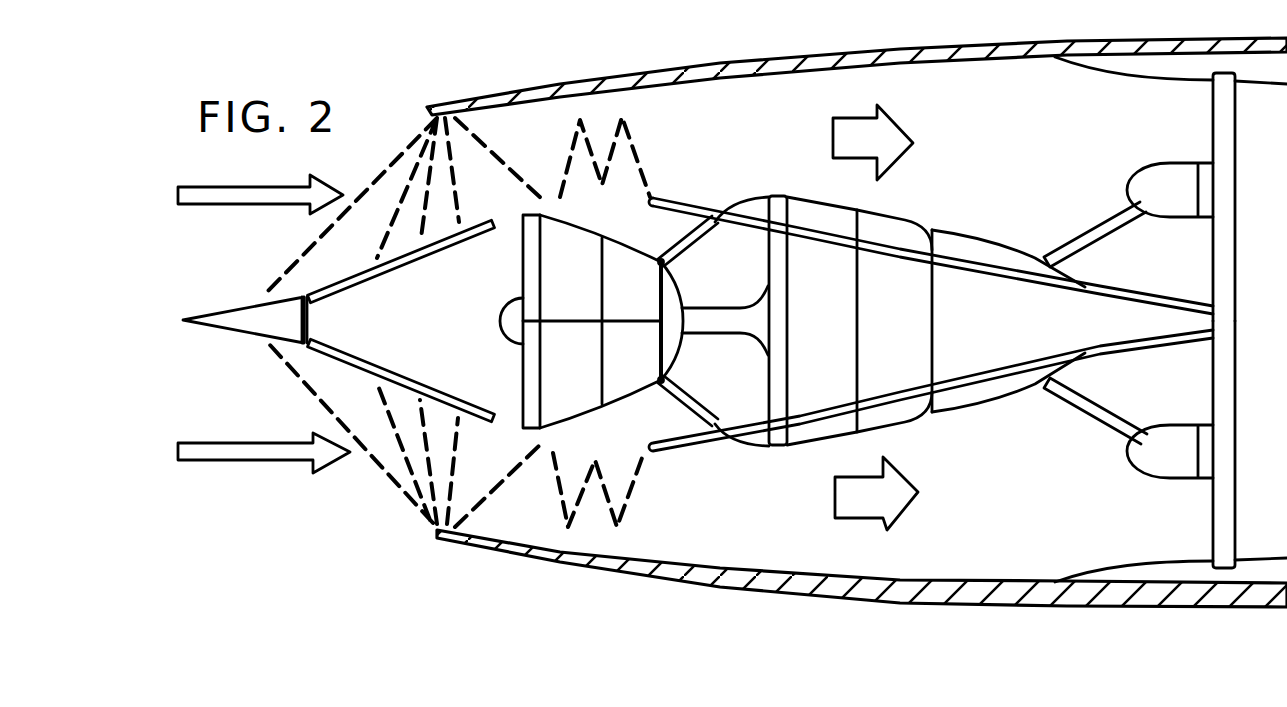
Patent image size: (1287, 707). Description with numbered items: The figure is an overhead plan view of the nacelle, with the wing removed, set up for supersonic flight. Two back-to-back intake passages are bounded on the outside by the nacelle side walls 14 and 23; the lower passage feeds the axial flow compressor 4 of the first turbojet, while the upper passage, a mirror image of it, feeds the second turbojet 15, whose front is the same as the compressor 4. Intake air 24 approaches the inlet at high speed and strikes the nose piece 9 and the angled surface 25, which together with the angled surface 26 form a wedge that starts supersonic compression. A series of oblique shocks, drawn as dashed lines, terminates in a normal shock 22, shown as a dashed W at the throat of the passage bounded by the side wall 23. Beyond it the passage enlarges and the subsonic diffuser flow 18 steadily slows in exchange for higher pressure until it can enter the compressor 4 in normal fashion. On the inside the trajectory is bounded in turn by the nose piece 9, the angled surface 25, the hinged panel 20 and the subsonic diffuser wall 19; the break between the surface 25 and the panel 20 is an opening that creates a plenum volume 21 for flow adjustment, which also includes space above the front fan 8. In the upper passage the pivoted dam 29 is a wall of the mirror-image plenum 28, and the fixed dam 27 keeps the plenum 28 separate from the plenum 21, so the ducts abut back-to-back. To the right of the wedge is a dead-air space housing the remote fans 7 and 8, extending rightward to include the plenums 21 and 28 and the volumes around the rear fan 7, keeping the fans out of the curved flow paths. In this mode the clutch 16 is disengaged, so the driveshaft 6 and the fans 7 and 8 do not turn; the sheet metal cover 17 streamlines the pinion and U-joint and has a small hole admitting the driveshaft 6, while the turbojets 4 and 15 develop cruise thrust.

The axial flow compressor 4 is at (1248, 503).
The driveshaft 6 is at (1100, 410).
The rear fan 7 is at (832, 348).
The front fan 8 is at (577, 370).
The nose piece 9 is at (243, 337).
The nacelle side wall 14 is at (697, 68).
The second turbojet 15 is at (1247, 125).
The clutch 16 is at (1207, 422).
The sheet metal cover 17 is at (987, 400).
The subsonic diffuser flow 18 is at (893, 500).
The subsonic diffuser wall 19 is at (893, 398).
The hinged panel 20 is at (700, 443).
The plenum volume 21 is at (675, 403).
The normal shock 22 is at (628, 495).
The nacelle side wall 23 is at (620, 577).
The intake air flow 24 is at (260, 455).
The angled surface 25 is at (407, 380).
The angled surface 26 is at (395, 262).
The fixed dam 27 is at (627, 316).
The mirror image plenum 28 is at (649, 244).
The pivoted dam 29 is at (686, 250).